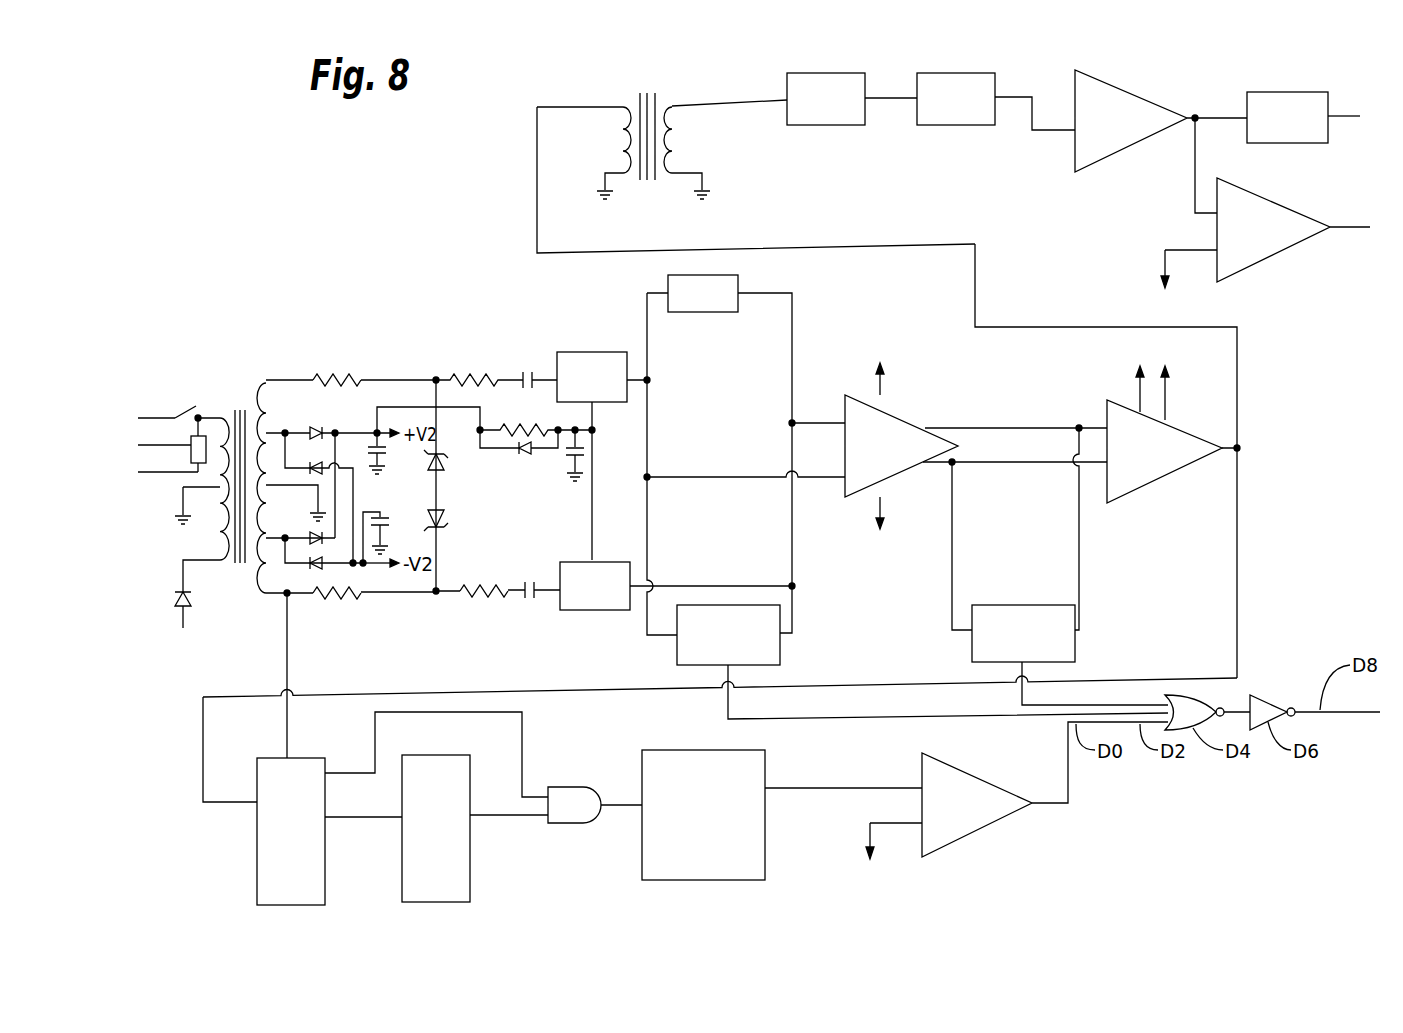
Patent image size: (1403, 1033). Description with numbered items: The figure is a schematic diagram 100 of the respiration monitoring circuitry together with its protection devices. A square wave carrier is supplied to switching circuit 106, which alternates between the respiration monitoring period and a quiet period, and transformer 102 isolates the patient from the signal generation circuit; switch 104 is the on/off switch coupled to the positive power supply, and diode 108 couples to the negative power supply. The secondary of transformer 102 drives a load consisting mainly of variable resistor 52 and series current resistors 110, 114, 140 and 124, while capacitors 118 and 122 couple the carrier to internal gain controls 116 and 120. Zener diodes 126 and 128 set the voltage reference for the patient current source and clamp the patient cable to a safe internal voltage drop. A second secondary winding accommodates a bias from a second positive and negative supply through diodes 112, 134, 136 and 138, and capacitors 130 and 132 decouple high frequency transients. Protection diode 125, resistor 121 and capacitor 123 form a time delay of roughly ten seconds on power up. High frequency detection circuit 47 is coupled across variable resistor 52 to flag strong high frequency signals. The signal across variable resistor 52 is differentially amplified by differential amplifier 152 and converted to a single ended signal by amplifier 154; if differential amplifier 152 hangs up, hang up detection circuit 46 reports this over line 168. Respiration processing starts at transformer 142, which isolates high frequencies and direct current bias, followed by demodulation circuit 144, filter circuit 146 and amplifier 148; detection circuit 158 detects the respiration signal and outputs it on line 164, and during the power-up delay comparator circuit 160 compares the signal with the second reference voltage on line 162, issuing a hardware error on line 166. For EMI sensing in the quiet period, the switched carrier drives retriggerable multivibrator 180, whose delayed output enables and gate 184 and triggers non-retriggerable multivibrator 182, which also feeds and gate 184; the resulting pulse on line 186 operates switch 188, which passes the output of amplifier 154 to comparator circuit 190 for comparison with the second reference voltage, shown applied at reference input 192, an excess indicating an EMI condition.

The schematic diagram 100 is at (397, 275).
The transformer 102 is at (240, 395).
The switch 104 is at (186, 397).
The switching circuit 106 is at (196, 470).
The diode 108 is at (183, 588).
The series current resistor 110 is at (343, 374).
The diode 112 is at (320, 462).
The series current resistor 114 is at (473, 372).
The internal gain control 116 is at (588, 350).
The capacitor 118 is at (529, 368).
The internal gain control 120 is at (596, 612).
The resistor 121 is at (534, 422).
The capacitor 122 is at (531, 602).
The capacitor 123 is at (584, 438).
The series current resistor 124 is at (482, 592).
The protection diode 125 is at (528, 458).
The zener diode 126 is at (446, 470).
The zener diode 128 is at (446, 528).
The capacitor 130 is at (460, 372).
The capacitor 132 is at (383, 508).
The diode 134 is at (318, 462).
The diode 136 is at (316, 546).
The diode 138 is at (318, 572).
The series current resistor 140 is at (344, 596).
The transformer 142 is at (655, 197).
The demodulation circuit 144 is at (806, 127).
The filter circuit 146 is at (933, 127).
The amplifier 148 is at (1075, 157).
The differential amplifier 152 is at (897, 412).
The amplifier 154 is at (1158, 484).
The detection circuit 158 is at (1283, 145).
The comparator circuit 160 is at (1265, 262).
The line 162 is at (1166, 247).
The line 164 is at (1340, 113).
The line 166 is at (1340, 225).
The line 168 is at (1105, 704).
The retriggerable multivibrator 180 is at (310, 756).
The non-retriggerable multivibrator 182 is at (452, 754).
The and gate 184 is at (568, 785).
The line 186 is at (619, 808).
The switch 188 is at (698, 748).
The comparator circuit 190 is at (970, 771).
The reference voltage input 192 is at (867, 821).
The hang up detection circuit 46 is at (970, 648).
The high frequency detection circuit 47 is at (782, 650).
The variable resistor 52 is at (740, 291).